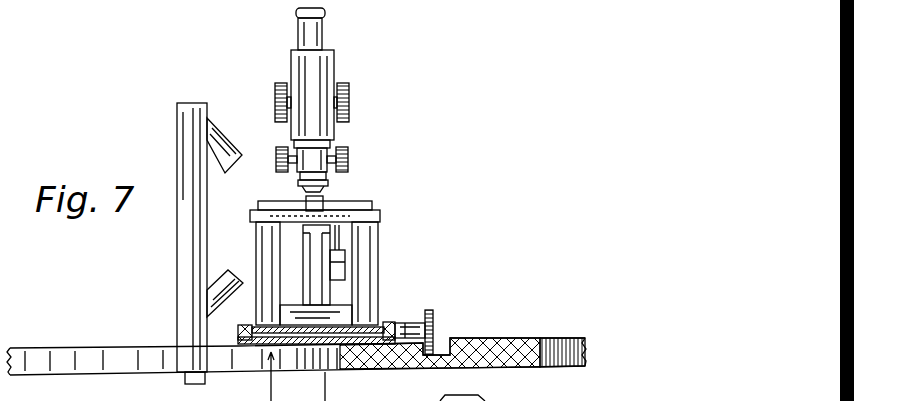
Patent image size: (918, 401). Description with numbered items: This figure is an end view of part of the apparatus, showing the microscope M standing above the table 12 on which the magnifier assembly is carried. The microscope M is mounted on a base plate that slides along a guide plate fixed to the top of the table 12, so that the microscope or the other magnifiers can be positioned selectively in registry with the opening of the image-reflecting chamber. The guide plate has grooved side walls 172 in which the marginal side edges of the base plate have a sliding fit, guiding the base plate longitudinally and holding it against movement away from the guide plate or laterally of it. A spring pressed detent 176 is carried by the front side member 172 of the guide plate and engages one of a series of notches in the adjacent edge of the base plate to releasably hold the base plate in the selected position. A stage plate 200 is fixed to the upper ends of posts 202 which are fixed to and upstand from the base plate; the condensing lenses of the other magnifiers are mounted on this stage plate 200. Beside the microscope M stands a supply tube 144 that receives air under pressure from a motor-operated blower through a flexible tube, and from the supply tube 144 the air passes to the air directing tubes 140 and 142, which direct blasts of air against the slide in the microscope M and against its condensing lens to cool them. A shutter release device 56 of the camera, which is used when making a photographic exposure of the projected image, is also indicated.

The microscope M is at (341, 62).
The table 12 is at (569, 334).
The shutter release device 56 is at (376, 376).
The air directing tube 140 is at (218, 133).
The air directing tube 142 is at (217, 275).
The supply tube 144 is at (180, 252).
The grooved side walls 172 is at (395, 322).
The spring pressed detent 176 is at (433, 317).
The stage plate 200 is at (378, 213).
The posts 202 is at (376, 251).